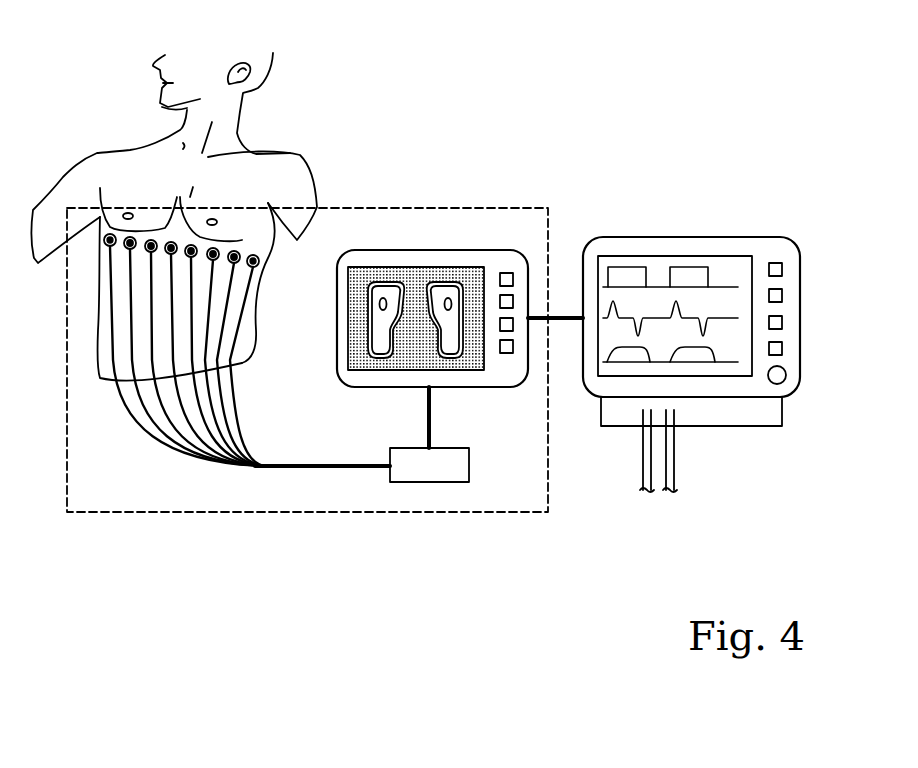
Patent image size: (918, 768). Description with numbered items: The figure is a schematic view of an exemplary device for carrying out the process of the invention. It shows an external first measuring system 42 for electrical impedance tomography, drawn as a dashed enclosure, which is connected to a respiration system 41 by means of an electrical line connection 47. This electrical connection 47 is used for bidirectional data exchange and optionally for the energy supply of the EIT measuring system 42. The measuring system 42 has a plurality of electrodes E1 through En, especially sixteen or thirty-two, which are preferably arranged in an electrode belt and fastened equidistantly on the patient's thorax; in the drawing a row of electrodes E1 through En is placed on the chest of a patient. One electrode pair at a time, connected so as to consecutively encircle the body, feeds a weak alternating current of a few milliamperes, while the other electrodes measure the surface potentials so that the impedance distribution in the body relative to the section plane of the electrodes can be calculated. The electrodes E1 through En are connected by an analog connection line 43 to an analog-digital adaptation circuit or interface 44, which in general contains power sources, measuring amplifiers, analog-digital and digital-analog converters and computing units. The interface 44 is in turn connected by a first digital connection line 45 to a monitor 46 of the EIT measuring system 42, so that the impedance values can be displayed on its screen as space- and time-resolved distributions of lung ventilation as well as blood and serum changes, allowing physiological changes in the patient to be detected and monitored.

The respiration system 41 is at (670, 237).
The first measuring system 42 is at (387, 207).
The analog connection line 43 is at (308, 468).
The analog-digital adaptation circuit 44 is at (427, 483).
The first digital connection line 45 is at (432, 430).
The monitor 46 is at (452, 250).
The electrical line connection 47 is at (542, 316).
The electrode E1 is at (104, 245).
The electrode En is at (256, 267).